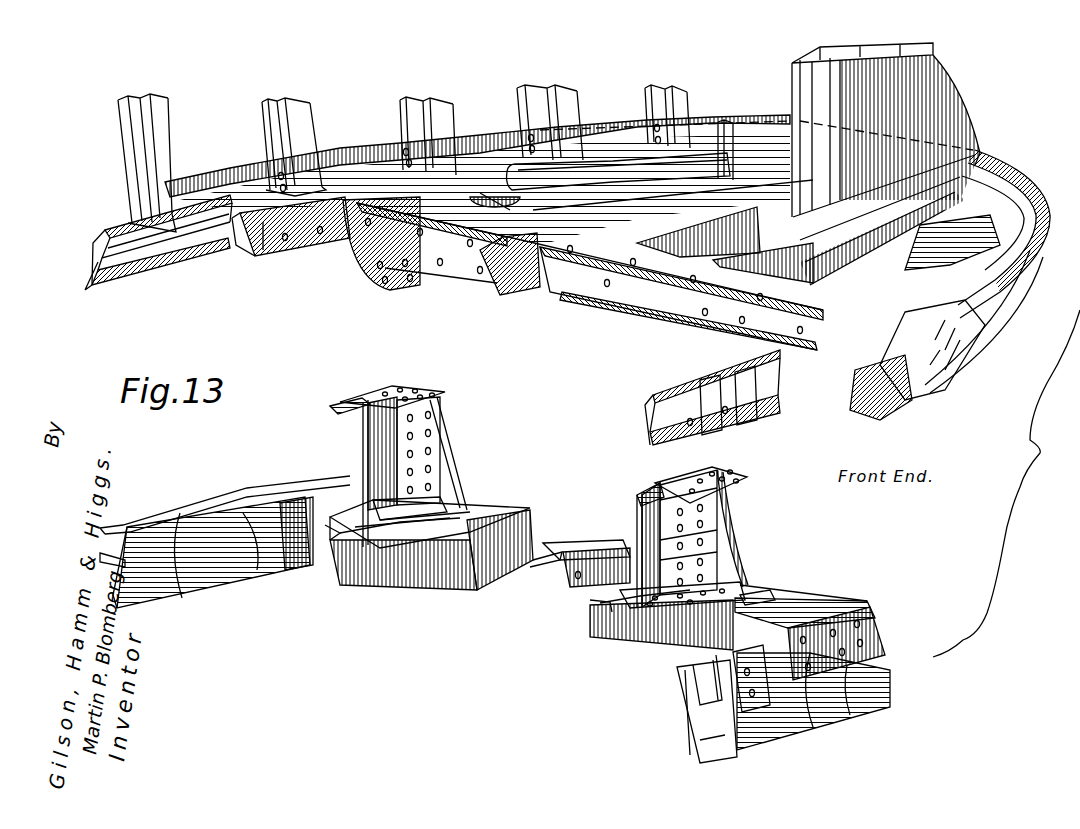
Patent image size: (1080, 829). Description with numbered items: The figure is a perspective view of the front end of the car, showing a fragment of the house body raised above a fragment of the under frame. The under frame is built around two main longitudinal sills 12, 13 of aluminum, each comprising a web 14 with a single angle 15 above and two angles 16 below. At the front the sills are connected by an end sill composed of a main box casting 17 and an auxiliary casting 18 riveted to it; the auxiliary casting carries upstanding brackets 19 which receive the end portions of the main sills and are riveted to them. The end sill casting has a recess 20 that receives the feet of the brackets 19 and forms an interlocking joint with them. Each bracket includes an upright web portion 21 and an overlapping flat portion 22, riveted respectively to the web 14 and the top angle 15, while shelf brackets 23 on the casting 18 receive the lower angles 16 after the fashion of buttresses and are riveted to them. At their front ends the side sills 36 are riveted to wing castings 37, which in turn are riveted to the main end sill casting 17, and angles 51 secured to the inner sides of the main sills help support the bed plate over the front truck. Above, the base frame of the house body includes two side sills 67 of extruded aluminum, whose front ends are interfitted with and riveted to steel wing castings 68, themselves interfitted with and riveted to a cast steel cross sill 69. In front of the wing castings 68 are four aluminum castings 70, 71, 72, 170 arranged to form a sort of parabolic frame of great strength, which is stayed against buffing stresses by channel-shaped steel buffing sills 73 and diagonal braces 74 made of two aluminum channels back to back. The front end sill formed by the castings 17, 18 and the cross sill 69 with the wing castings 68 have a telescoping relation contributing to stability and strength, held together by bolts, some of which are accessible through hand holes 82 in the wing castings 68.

The main longitudinal sill 12 is at (358, 436).
The main longitudinal sill 13 is at (630, 499).
The web 14 is at (366, 462).
The single angle 15 is at (345, 403).
The lower angle 16 is at (372, 522).
The main box casting 17 is at (490, 568).
The auxiliary casting 18 is at (470, 515).
The upstanding bracket 19 is at (453, 472).
The recess 20 is at (772, 598).
The upright web portion 21 is at (432, 440).
The overlapping flat portion 22 is at (432, 381).
The shelf bracket 23 is at (442, 535).
The side sill 36 is at (125, 535).
The wing casting 37 is at (212, 558).
The angle 51 is at (390, 540).
The side sill 67 is at (106, 230).
The wing casting 68 is at (376, 200).
The cross sill 69 is at (510, 275).
The aluminum casting 70 is at (1010, 258).
The aluminum casting 71 is at (1010, 196).
The aluminum casting 72 is at (588, 140).
The buffing sill 73 is at (755, 205).
The diagonal brace 74 is at (660, 205).
The hand hole 82 is at (270, 225).
The aluminum casting 170 is at (785, 125).